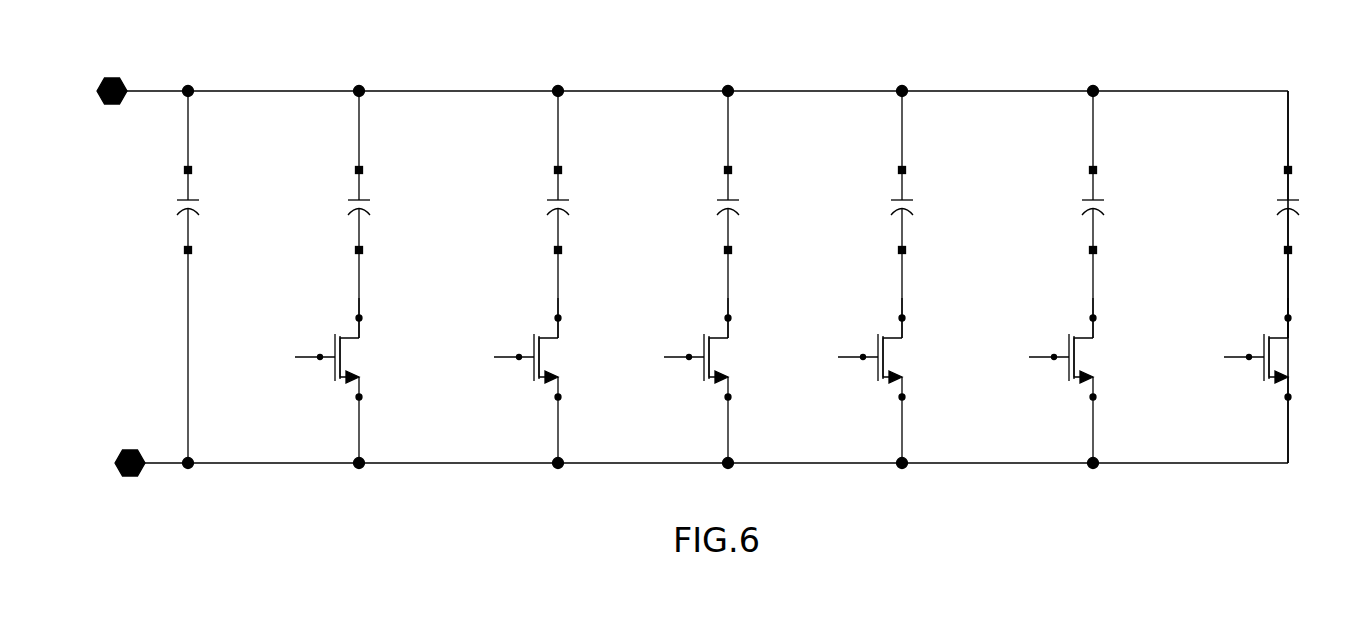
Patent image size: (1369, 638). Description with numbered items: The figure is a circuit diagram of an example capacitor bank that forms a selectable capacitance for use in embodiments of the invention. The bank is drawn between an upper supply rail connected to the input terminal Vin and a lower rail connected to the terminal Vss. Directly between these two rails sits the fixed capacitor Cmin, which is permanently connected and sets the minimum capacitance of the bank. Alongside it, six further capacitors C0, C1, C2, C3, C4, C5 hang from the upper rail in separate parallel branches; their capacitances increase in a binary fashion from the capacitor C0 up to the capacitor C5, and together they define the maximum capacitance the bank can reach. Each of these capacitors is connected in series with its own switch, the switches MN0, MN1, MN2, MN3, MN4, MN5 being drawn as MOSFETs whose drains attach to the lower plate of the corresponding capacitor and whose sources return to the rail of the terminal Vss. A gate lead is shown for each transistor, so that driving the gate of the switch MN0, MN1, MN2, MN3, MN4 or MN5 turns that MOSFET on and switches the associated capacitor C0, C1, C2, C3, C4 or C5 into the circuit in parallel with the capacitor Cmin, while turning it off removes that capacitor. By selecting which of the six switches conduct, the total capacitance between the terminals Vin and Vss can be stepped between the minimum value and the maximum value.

The input voltage terminal Vin is at (110, 78).
The ground (Vss) terminal Vss is at (121, 450).
The minimum capacitance capacitor Cmin is at (221, 277).
The capacitor C0 is at (377, 212).
The capacitor C1 is at (576, 212).
The capacitor C2 is at (746, 212).
The capacitor C3 is at (920, 212).
The capacitor C4 is at (1111, 212).
The capacitor C5 is at (1306, 214).
The switch MN0 is at (356, 383).
The switch MN1 is at (555, 383).
The switch MN2 is at (725, 383).
The switch MN3 is at (899, 383).
The switch MN4 is at (1090, 383).
The switch MN5 is at (1285, 380).